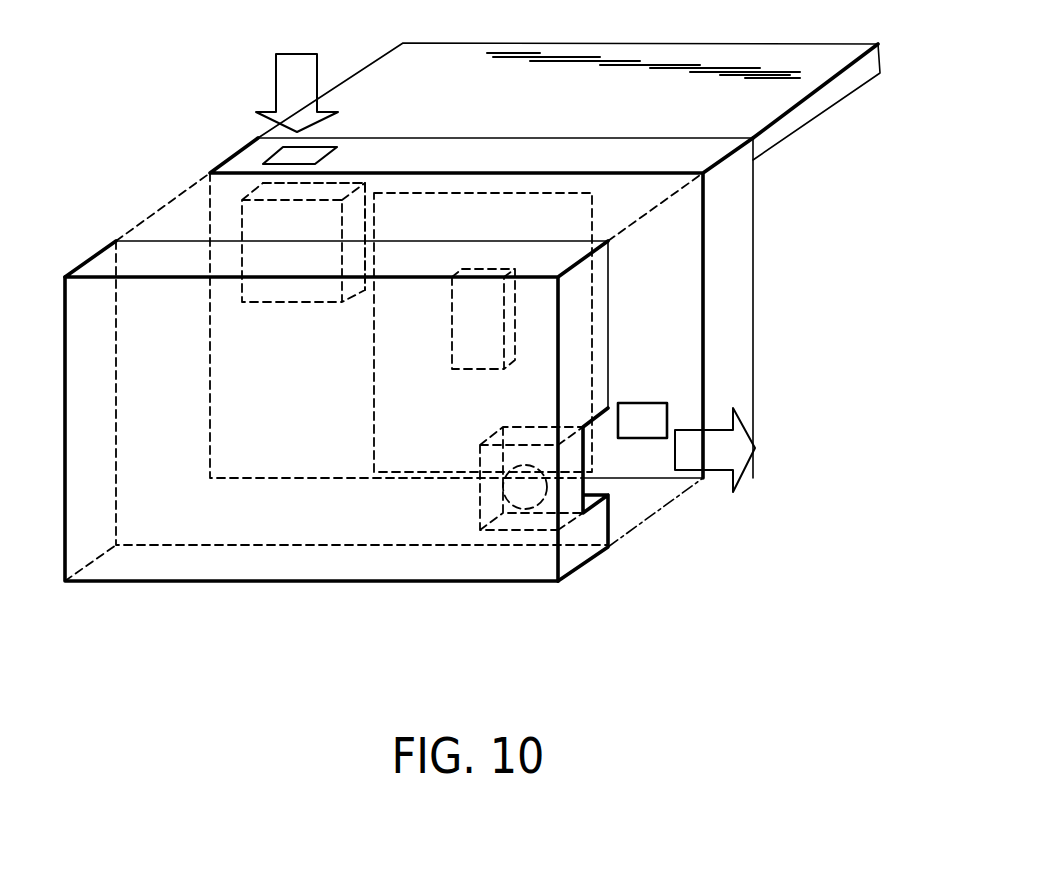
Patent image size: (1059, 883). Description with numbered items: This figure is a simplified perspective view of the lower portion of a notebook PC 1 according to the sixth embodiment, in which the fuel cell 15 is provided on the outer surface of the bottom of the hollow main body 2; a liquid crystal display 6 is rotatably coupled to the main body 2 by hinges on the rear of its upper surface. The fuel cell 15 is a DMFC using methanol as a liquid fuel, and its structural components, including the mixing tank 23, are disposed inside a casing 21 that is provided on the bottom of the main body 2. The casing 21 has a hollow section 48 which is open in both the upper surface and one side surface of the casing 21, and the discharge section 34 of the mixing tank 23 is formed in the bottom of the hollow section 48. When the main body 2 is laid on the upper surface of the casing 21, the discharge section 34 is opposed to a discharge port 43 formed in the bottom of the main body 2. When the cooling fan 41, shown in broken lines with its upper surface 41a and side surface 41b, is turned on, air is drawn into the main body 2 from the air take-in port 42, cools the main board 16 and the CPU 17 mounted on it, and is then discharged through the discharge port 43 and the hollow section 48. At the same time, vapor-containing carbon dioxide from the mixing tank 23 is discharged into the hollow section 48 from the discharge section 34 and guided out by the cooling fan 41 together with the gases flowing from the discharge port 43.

The notebook PC 1 is at (518, 295).
The main body 2 is at (738, 265).
The liquid crystal display 6 is at (793, 73).
The fuel cell 15 is at (385, 466).
The main board 16 is at (527, 193).
The CPU 17 is at (518, 297).
The casing 21 is at (172, 568).
The mixing tank 23 is at (518, 532).
The discharge section 34 is at (492, 489).
The cooling fan 41 is at (242, 222).
The upper surface of lock member 41a is at (330, 183).
The side surface of lock member 41b is at (352, 217).
The air take-in port 42 is at (290, 157).
The discharge port 43 is at (647, 410).
The hollow section 48 is at (588, 484).